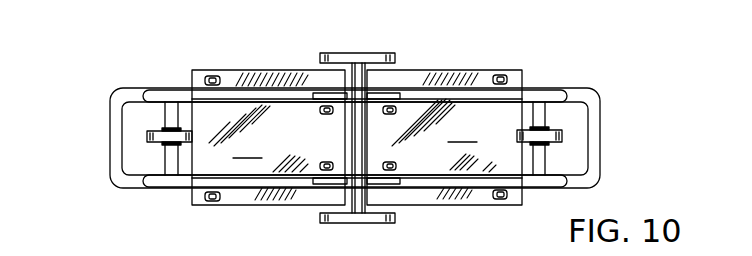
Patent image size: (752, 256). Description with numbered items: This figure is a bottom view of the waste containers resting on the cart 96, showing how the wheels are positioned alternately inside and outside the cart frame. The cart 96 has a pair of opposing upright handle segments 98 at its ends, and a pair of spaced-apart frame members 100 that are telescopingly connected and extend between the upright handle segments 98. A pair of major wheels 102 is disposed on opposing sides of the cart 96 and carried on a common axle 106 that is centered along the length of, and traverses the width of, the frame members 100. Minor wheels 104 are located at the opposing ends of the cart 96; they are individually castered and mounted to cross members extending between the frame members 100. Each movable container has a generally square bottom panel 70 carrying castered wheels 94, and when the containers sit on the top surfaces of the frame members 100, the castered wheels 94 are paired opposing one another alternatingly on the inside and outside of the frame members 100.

The bottom panel 70 is at (357, 137).
The castered wheels 94 is at (206, 77).
The cart 96 is at (353, 134).
The upright handle segments 98 is at (112, 157).
The frame members 100 is at (278, 92).
The major wheels 102 is at (335, 54).
The minor wheels 104 is at (148, 138).
The axle 106 is at (353, 133).